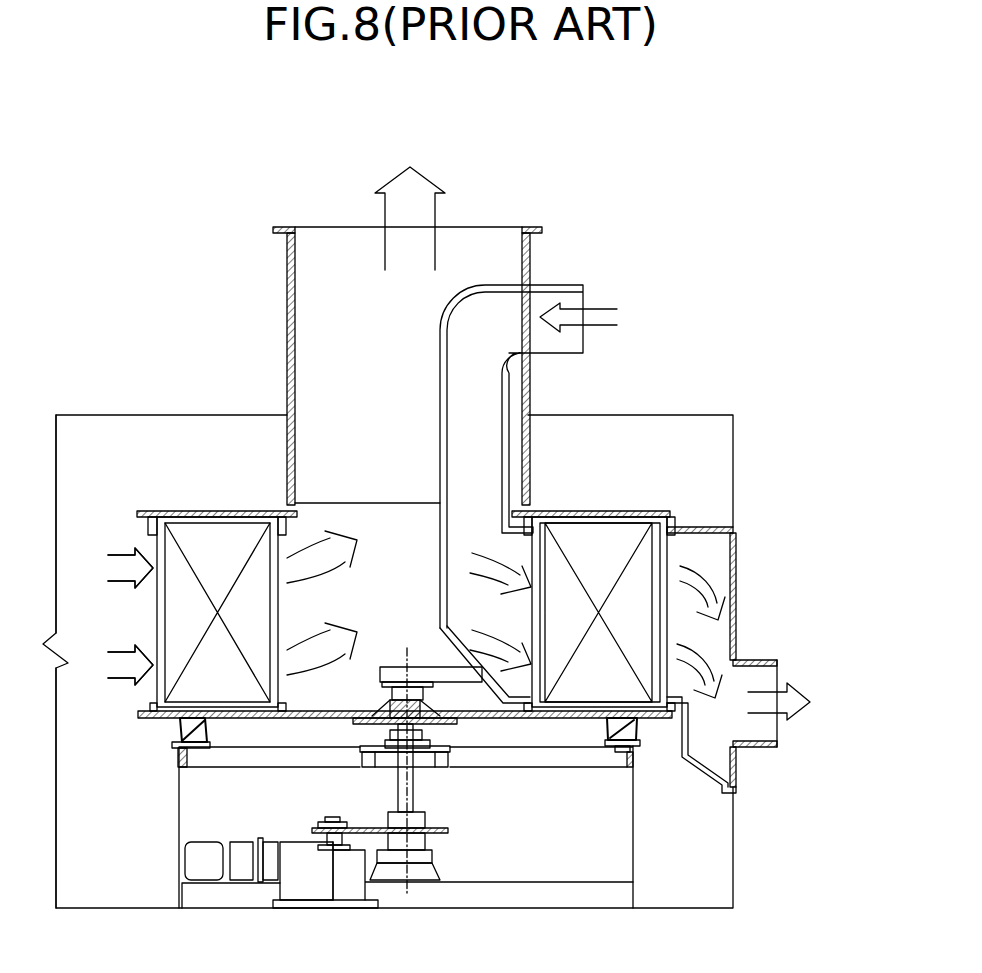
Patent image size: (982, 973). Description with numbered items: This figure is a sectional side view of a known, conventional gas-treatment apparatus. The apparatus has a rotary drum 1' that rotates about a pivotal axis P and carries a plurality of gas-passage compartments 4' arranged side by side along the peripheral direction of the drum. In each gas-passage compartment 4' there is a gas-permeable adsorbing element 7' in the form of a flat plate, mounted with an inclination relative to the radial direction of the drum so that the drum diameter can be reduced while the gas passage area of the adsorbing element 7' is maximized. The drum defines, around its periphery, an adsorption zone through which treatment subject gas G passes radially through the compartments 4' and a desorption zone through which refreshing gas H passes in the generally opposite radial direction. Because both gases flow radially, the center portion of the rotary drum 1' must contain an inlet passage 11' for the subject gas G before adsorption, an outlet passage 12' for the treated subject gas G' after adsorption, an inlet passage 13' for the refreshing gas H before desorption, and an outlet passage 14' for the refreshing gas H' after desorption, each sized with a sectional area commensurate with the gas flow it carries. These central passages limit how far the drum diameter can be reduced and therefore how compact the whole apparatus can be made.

The rotary drum 1' is at (403, 488).
The gas-passage compartments 4' is at (408, 577).
The gas-permeable adsorbing element 7' is at (397, 614).
The inlet passage 11' is at (104, 661).
The outlet passage 12' is at (363, 589).
The inlet passage 13' is at (511, 494).
The outlet passage 14' is at (722, 660).
The pivotal axis P is at (397, 757).
The treatment subject gas G is at (112, 604).
The subject gas after adsorption treatment G' is at (407, 319).
The refreshing gas H is at (589, 317).
The refreshing gas after desorption treatment H' is at (799, 701).